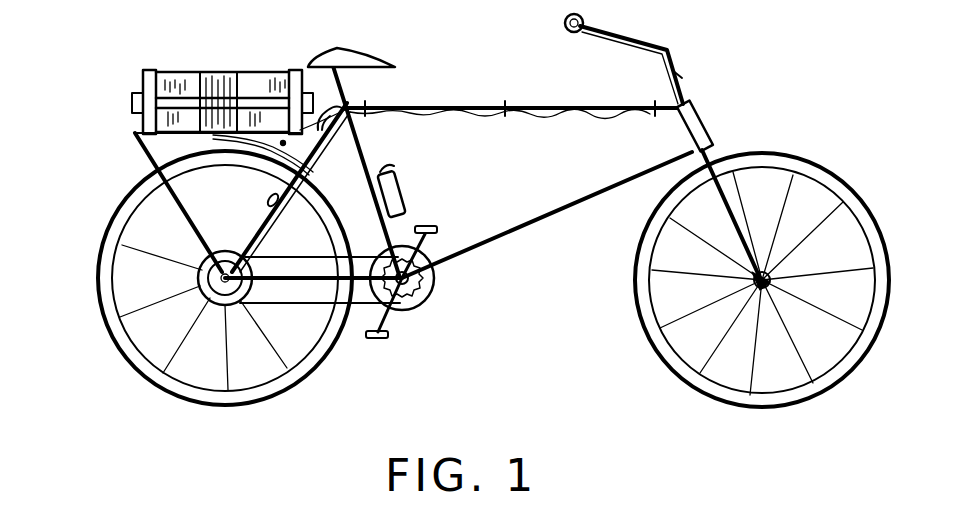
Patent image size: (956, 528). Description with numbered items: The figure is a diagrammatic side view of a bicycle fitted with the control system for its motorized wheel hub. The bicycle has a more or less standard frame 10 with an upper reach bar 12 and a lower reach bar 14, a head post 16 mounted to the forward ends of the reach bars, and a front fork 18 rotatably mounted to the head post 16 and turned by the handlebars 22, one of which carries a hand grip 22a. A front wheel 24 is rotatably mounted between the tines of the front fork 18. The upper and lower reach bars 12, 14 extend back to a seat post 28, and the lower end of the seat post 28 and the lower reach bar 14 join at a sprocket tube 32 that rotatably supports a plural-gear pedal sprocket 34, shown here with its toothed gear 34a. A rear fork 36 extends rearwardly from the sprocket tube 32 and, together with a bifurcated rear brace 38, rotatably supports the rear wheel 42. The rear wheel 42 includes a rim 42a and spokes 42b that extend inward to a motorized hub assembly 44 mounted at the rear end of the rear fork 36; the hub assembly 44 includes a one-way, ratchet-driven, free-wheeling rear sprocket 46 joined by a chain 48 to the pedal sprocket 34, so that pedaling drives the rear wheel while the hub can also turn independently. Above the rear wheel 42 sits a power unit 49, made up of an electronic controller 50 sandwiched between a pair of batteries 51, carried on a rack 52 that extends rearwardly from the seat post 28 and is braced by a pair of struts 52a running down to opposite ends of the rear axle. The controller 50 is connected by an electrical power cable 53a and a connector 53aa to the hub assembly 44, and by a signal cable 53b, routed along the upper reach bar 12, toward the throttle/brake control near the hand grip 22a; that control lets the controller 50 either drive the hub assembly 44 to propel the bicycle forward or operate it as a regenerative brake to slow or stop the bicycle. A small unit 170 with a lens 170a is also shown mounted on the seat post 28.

The frame 10 is at (464, 91).
The upper reach bar 12 is at (574, 106).
The lower reach bar 14 is at (549, 211).
The head post 16 is at (704, 126).
The front fork 18 is at (720, 232).
The handlebars 22 is at (628, 42).
The hand grip 22a is at (564, 23).
The front wheel 24 is at (762, 255).
The seat post 28 is at (365, 150).
The sprocket tube 32 is at (442, 289).
The plural-gear pedal sprocket 34 is at (415, 312).
The sprocket gear 34a is at (436, 280).
The rear fork 36 is at (288, 290).
The bifurcated rear brace 38 is at (312, 162).
The rear wheel 42 is at (188, 278).
The rim 42a is at (125, 348).
The spokes 42b is at (197, 312).
The motorized hub assembly 44 is at (208, 262).
The rear sprocket 46 is at (232, 294).
The chain 48 is at (318, 260).
The power unit 49 is at (185, 81).
The electronic controller 50 is at (232, 79).
The batteries 51 is at (186, 90).
The rack 52 is at (345, 106).
The struts 52a is at (140, 150).
The electrical power cable 53a is at (275, 192).
The connector 53aa is at (270, 198).
The signal cable 53b is at (361, 132).
The light unit 170 is at (426, 191).
The light lens 170a is at (398, 172).